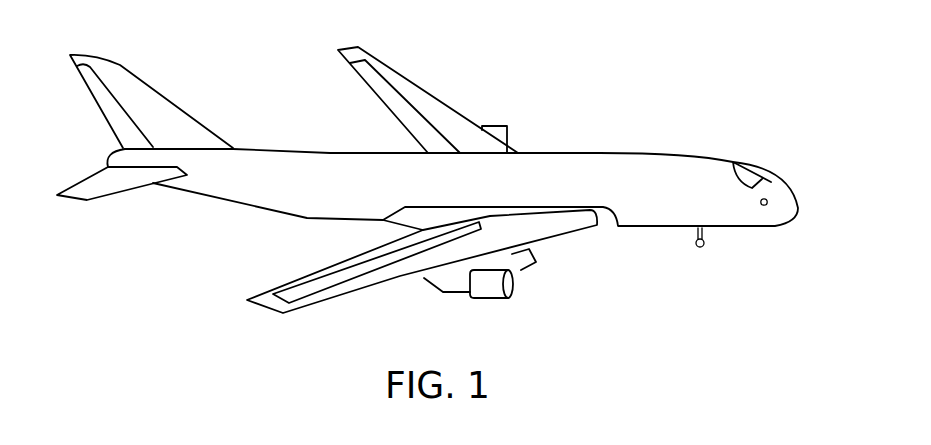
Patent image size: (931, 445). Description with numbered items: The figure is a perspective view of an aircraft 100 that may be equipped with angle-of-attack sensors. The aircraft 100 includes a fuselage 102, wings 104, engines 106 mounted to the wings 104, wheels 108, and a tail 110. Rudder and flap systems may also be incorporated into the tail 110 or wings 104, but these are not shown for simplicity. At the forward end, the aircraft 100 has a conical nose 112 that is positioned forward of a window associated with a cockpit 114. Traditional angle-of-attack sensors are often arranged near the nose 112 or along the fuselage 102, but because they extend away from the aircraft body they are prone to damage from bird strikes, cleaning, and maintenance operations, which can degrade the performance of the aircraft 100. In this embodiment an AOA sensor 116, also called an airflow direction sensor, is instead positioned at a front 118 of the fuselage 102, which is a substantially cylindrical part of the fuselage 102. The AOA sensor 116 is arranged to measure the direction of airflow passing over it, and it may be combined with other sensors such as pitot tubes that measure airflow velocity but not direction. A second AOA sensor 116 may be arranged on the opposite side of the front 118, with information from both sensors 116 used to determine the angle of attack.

The aircraft 100 is at (711, 63).
The fuselage 102 is at (583, 152).
The wings 104 is at (353, 52).
The engines 106 is at (493, 290).
The wheels 108 is at (697, 250).
The tail 110 is at (124, 78).
The conical nose 112 is at (790, 193).
The cockpit 114 is at (733, 162).
The AOA sensor 116 is at (761, 206).
The front 118 is at (802, 213).